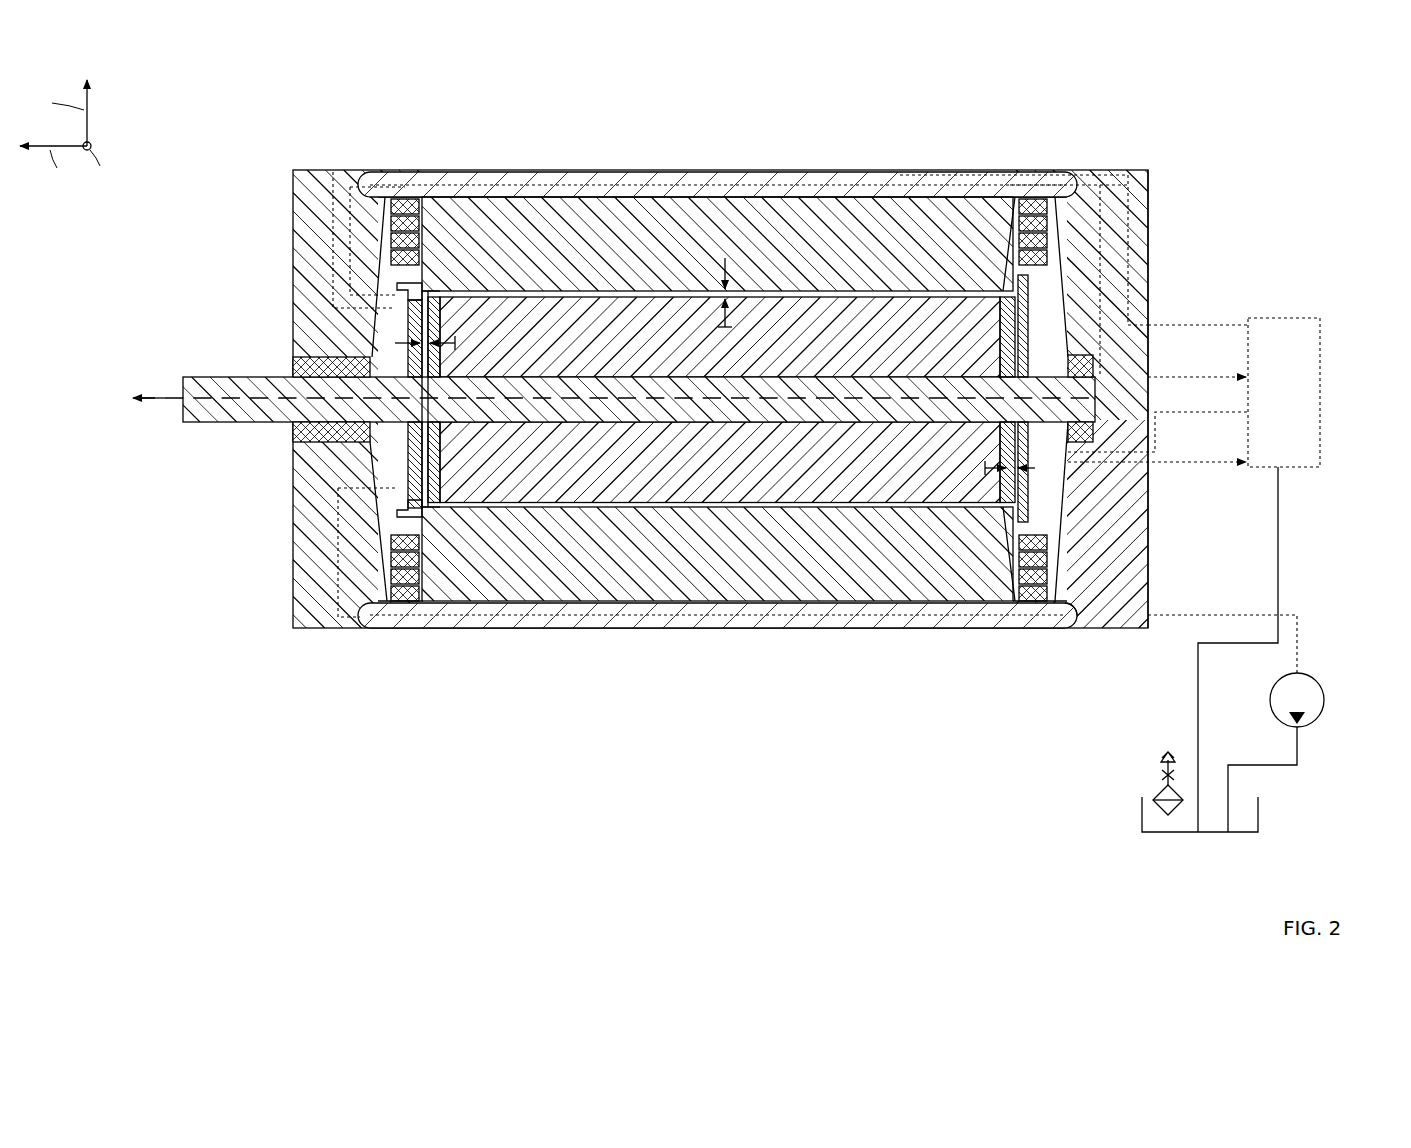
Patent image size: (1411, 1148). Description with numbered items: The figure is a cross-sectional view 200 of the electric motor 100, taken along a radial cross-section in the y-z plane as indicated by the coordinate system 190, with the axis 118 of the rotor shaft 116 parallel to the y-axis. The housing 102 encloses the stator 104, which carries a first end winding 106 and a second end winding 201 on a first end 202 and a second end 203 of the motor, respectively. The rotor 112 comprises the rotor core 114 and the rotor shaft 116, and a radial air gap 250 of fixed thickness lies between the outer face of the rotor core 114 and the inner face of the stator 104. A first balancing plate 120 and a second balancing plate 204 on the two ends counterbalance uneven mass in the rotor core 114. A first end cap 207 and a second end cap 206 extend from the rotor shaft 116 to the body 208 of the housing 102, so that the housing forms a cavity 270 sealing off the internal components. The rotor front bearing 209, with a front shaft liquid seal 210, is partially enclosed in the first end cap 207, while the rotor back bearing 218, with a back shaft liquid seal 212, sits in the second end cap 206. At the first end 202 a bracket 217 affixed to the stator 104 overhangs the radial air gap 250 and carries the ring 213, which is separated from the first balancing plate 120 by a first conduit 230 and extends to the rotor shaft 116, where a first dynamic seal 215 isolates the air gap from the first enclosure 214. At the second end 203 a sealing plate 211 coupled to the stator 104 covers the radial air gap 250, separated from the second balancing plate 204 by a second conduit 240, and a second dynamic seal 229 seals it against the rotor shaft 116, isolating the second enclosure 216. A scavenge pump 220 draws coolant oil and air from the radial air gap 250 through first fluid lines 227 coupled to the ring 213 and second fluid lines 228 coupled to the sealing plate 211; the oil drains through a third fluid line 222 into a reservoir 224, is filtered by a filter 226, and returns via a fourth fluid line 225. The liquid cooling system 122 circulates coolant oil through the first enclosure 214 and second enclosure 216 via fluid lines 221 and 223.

The electric motor 100 is at (1243, 112).
The housing 102 is at (740, 158).
The stator 104 is at (575, 200).
The first end winding 106 is at (386, 235).
The rotor 112 is at (700, 508).
The rotor core 114 is at (725, 385).
The rotor shaft 116 is at (200, 425).
The axis 118 is at (155, 395).
The first balancing plate 120 is at (433, 290).
The liquid cooling system 122 is at (1295, 318).
The coordinate system 190 is at (105, 105).
The cross-sectional view 200 is at (1170, 138).
The second end winding 201 is at (1055, 565).
The first end 202 is at (243, 600).
The second end 203 is at (1180, 503).
The second balancing plate 204 is at (1008, 287).
The second end cap 206 is at (1165, 228).
The first end cap 207 is at (268, 182).
The body 208 is at (908, 185).
The rotor front bearing 209 is at (300, 366).
The front shaft liquid seal 210 is at (293, 426).
The sealing plate 211 is at (1030, 290).
The back shaft liquid seal 212 is at (1093, 380).
The ring 213 is at (388, 315).
The first enclosure 214 is at (388, 345).
The first dynamic seal 215 is at (403, 437).
The second enclosure 216 is at (1047, 488).
The bracket 217 is at (398, 290).
The rotor back bearing 218 is at (1067, 372).
The scavenge pump 220 is at (1322, 688).
The fluid line 221 is at (1198, 351).
The third fluid line 222 is at (1300, 760).
The fluid line 223 is at (1158, 437).
The reservoir 224 is at (1200, 834).
The fourth fluid line 225 is at (1280, 560).
The filter 226 is at (1160, 795).
The first fluid lines 227 is at (662, 617).
The second fluid lines 228 is at (1012, 613).
The second dynamic seal 229 is at (1033, 425).
The first conduit 230 is at (445, 343).
The second conduit 240 is at (1005, 468).
The radial air gap 250 is at (720, 262).
The cavity 270 is at (1065, 270).